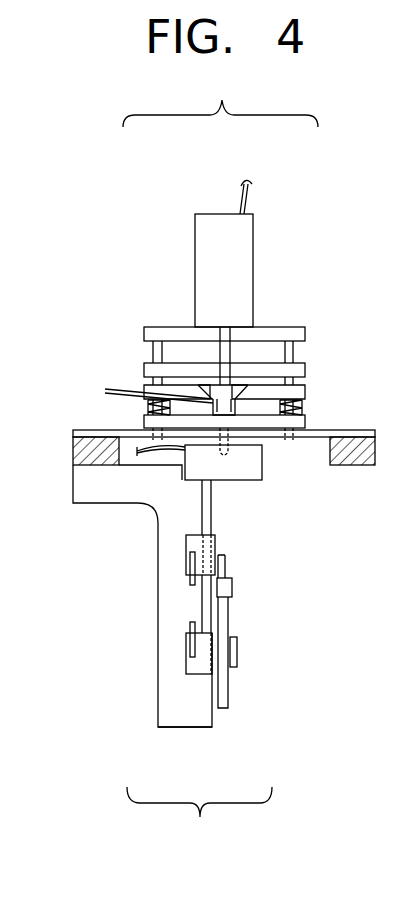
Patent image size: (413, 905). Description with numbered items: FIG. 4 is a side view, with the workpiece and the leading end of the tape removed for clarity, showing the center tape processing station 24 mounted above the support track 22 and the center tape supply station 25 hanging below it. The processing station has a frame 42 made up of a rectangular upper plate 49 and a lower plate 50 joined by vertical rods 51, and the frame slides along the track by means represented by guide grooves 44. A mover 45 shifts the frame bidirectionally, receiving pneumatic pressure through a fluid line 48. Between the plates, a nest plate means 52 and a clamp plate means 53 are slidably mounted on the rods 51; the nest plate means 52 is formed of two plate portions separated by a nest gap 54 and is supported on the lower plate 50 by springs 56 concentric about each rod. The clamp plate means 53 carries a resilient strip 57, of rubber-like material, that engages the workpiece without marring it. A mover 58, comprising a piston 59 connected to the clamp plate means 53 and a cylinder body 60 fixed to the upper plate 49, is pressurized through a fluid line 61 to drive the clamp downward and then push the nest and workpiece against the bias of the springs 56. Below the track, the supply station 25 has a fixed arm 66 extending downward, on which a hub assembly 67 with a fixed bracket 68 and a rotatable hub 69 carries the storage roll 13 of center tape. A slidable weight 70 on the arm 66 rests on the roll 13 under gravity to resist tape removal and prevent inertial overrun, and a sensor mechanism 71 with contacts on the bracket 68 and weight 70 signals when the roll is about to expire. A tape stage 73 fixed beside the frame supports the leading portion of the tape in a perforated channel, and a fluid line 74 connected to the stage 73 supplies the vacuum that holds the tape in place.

The center tape processing station 24 is at (220, 100).
The center tape supply station 25 is at (199, 817).
The storage roll 13 is at (228, 699).
The support track 22 is at (73, 457).
The frame 42 is at (140, 300).
The guide grooves 44 is at (290, 437).
The mover 45 is at (254, 488).
The fluid line 48 is at (137, 458).
The upper plate 49 is at (277, 330).
The lower plate 50 is at (144, 424).
The rods 51 is at (153, 350).
The nest plate means 52 is at (305, 392).
The clamp plate means 53 is at (305, 370).
The nest gap 54 is at (231, 394).
The springs 56 is at (148, 407).
The resilient strip 57 is at (212, 384).
The mover 58 is at (226, 204).
The piston 59 is at (230, 333).
The cylinder body 60 is at (203, 220).
The fluid line 61 is at (246, 204).
The fixed arm 66 is at (186, 722).
The hub assembly 67 is at (188, 686).
The fixed bracket 68 is at (186, 665).
The rotatable hub 69 is at (237, 652).
The slidable weight 70 is at (215, 547).
The sensor mechanism 71 is at (188, 582).
The tape stage 73 is at (243, 433).
The fluid line 74 is at (104, 390).